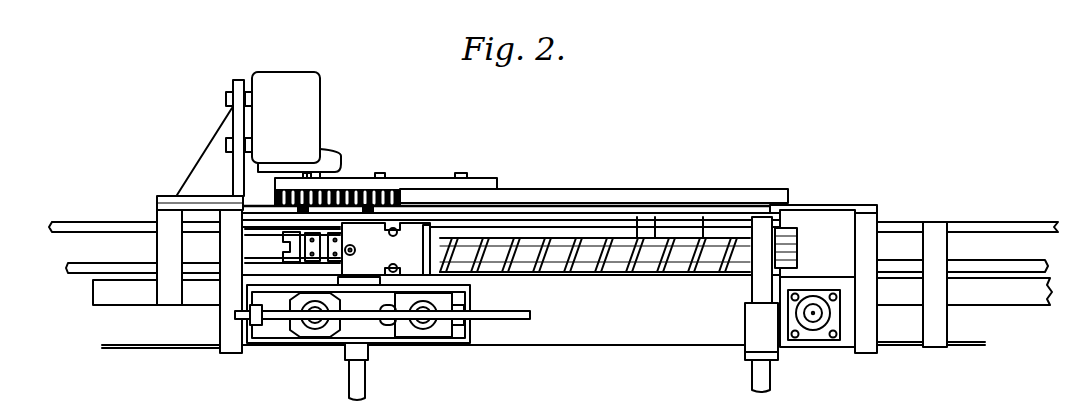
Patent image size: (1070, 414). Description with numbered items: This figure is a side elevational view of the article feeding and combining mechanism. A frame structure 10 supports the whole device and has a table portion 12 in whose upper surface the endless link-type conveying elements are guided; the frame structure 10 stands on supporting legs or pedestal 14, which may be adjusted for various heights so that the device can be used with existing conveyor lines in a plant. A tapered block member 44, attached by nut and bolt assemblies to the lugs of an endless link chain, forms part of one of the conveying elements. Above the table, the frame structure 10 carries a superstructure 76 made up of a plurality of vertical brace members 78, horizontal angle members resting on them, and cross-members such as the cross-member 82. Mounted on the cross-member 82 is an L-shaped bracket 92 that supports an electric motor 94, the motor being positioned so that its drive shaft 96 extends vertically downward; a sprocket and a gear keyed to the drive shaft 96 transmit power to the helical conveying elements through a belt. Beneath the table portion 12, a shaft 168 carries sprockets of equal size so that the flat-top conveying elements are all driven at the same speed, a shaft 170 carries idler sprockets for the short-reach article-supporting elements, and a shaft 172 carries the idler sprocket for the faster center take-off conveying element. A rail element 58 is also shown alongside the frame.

The frame structure 10 is at (559, 302).
The table portion 12 is at (595, 307).
The supporting legs or pedestal 14 is at (363, 317).
The tapered block member 44 is at (294, 246).
The side rails 58 is at (553, 260).
The superstructure 76 is at (599, 181).
The vertical brace members 78 is at (533, 241).
The cross-member 82 is at (197, 170).
The L-shaped bracket 92 is at (210, 137).
The electric motor 94 is at (314, 125).
The drive shaft 96 is at (386, 171).
The shaft 168 is at (829, 299).
The shaft 170 is at (358, 337).
The shaft 172 is at (422, 343).